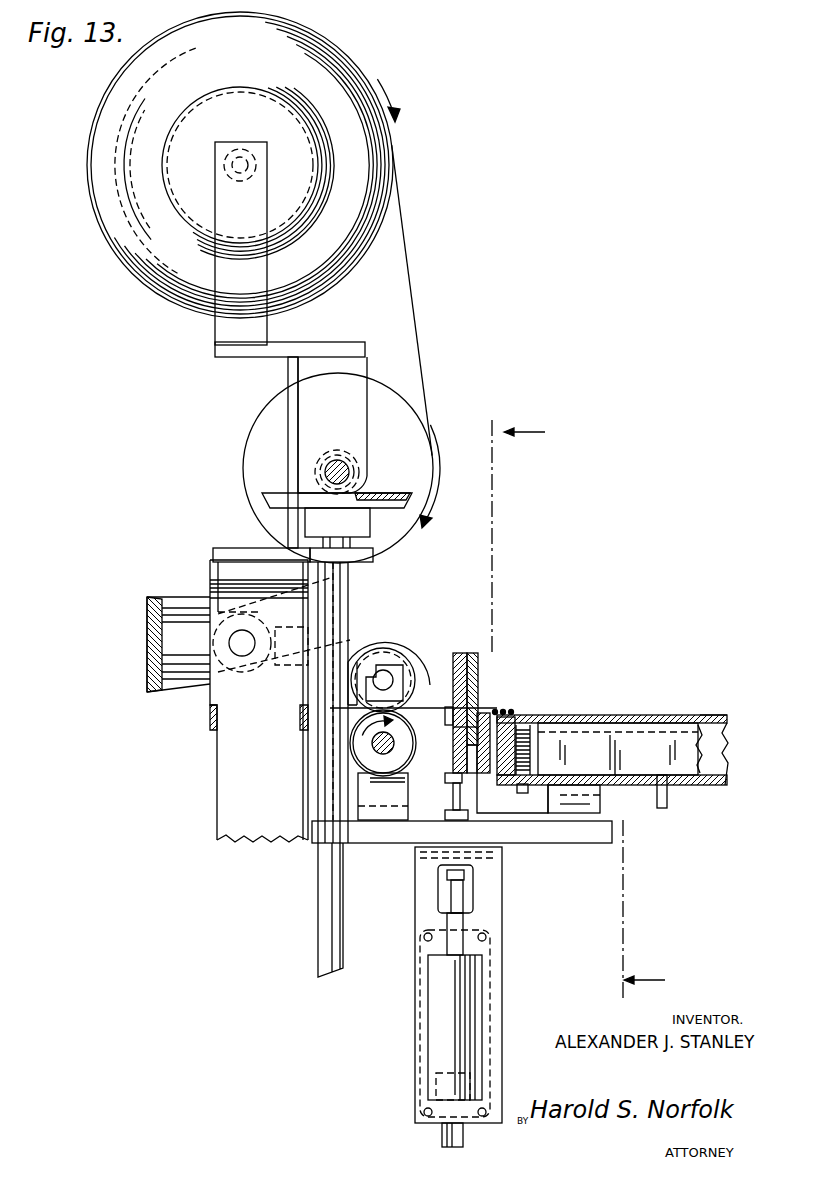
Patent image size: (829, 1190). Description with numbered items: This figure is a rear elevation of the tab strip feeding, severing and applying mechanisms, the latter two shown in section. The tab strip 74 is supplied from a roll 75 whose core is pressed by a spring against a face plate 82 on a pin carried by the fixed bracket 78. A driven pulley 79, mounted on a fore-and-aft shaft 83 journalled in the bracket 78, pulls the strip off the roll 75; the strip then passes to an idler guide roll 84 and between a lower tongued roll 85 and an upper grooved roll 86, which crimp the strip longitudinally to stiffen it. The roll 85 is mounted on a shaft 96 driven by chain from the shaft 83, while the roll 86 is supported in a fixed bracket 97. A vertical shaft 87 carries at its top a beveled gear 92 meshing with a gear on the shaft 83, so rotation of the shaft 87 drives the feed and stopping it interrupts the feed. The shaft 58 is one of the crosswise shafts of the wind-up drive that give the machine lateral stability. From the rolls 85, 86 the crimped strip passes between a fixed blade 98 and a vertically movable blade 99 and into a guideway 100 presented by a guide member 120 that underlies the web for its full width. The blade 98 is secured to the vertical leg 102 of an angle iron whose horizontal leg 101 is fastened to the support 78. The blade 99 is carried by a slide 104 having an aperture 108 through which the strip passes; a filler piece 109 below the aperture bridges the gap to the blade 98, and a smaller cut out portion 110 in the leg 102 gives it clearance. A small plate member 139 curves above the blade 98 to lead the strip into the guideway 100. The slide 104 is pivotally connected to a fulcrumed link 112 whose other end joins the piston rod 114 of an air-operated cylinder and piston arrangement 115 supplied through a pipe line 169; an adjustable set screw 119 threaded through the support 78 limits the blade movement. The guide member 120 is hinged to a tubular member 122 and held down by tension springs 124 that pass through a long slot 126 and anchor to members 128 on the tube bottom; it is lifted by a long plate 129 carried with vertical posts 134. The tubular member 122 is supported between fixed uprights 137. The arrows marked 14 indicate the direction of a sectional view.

The roll 75 is at (125, 96).
The face plate 82 is at (185, 128).
The tab strip 74 is at (406, 257).
The fixed bracket 78 is at (355, 395).
The driven pulley 79 is at (245, 441).
The fore-and-aft shaft 83 is at (352, 471).
The beveled gear 92 is at (265, 504).
The shaft 58 is at (187, 597).
The idler guide roll 84 is at (258, 680).
The fixed bracket 97 is at (372, 632).
The upper roll 86 is at (403, 660).
The fore-and-aft shaft 96 is at (370, 748).
The lower roll 85 is at (378, 768).
The slide 104 is at (460, 653).
The vertically movable blade 99 is at (478, 670).
The fixed blade 98 is at (485, 712).
The smaller cut out portion 110 is at (467, 758).
The filler piece 109 is at (470, 733).
The aperture 108 is at (446, 707).
The small plate member 139 is at (497, 709).
The adjustable set screw 119 is at (447, 793).
The vertical leg 102 is at (474, 800).
The tension springs 124 is at (531, 751).
The guideway 100 is at (650, 716).
The guide member 120 is at (712, 715).
The plate 129 is at (618, 749).
The long slot 126 is at (722, 740).
The tubular member 122 is at (718, 786).
The vertical posts 134 is at (667, 797).
The fixed uprights 137 is at (600, 803).
The members 128 is at (528, 793).
The horizontal leg 101 is at (578, 843).
The vertical shaft 87 is at (318, 891).
The link 112 is at (440, 878).
The piston rod 114 is at (447, 918).
The cylinder and piston arrangement 115 is at (437, 994).
The pipe line 169 is at (442, 1136).
The section line 14 is at (578, 707).